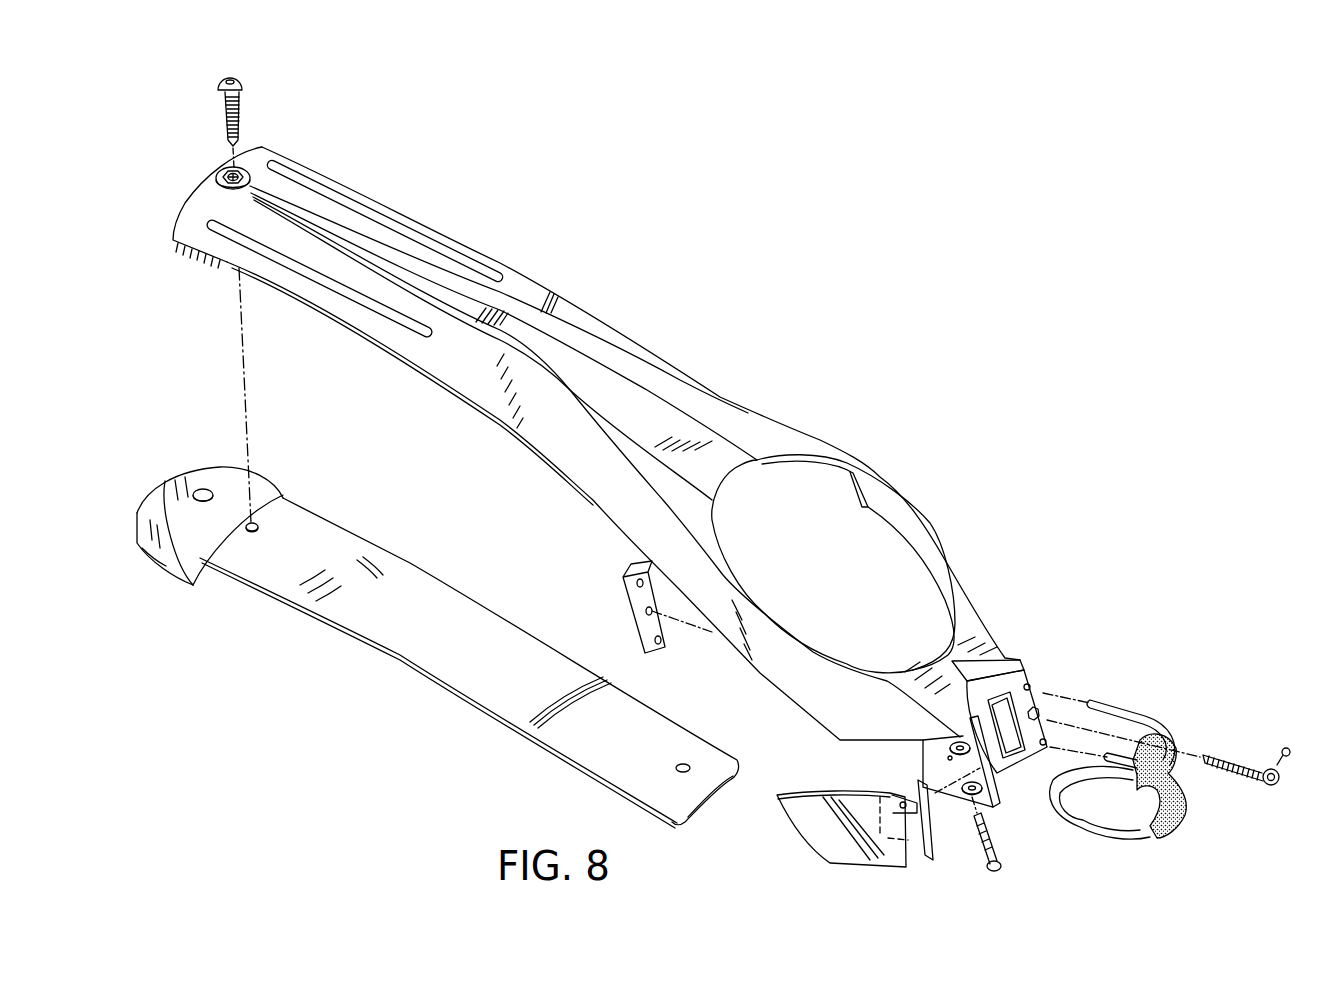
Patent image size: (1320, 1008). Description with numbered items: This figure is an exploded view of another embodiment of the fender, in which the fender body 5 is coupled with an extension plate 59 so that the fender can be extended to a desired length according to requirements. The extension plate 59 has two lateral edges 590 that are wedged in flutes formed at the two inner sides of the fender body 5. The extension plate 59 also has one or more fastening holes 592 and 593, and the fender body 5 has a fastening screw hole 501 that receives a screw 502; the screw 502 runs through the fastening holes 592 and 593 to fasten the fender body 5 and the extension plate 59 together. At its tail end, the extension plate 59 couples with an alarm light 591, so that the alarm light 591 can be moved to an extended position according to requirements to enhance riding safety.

The fender body 5 is at (727, 350).
The fastening screw hole 501 is at (258, 150).
The screw 502 is at (243, 108).
The extension plate 59 is at (332, 640).
The lateral edges 590 is at (389, 655).
The alarm light 591 is at (165, 490).
The fastening hole 592 is at (256, 524).
The fastening hole 593 is at (676, 768).